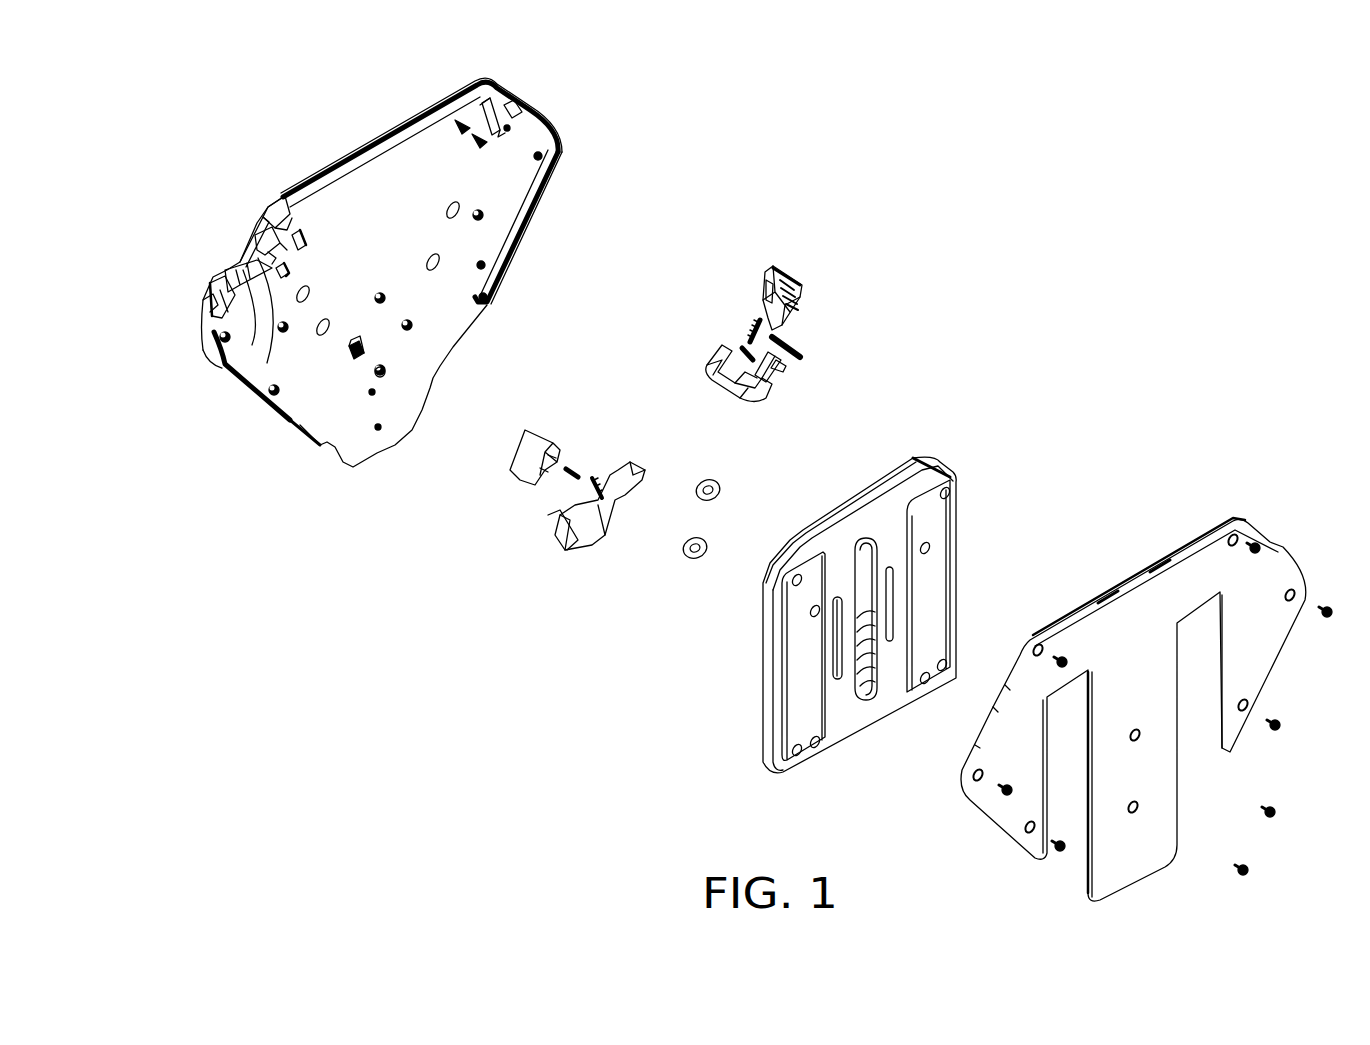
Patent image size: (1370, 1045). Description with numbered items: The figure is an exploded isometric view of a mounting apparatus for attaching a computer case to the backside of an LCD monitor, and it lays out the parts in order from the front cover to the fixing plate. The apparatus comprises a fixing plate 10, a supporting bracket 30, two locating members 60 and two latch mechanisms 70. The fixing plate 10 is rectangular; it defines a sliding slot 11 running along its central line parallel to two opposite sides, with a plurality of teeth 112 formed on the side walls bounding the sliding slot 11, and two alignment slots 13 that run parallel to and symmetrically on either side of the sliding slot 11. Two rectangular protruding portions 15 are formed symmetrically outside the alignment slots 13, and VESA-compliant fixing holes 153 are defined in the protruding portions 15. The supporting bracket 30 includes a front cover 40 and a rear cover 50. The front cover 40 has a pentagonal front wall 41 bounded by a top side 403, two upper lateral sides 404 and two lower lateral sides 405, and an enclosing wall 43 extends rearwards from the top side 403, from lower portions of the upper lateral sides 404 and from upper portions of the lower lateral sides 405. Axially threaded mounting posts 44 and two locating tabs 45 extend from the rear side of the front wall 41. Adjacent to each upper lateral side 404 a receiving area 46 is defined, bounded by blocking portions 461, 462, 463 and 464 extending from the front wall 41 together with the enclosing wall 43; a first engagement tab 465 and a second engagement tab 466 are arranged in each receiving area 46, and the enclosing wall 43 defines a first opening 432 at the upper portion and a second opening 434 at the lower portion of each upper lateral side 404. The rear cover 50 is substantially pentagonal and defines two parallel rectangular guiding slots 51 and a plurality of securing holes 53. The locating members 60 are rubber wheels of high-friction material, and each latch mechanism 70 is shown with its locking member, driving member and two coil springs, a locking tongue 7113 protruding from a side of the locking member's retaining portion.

The supporting bracket 30 is at (1017, 264).
The front cover 40 is at (611, 192).
The front wall 41 is at (430, 155).
The top side 403 is at (370, 140).
The enclosing wall 43 is at (540, 205).
The lower lateral sides 405 is at (308, 437).
The blocking portion 461 is at (283, 200).
The blocking portion 463 is at (302, 237).
The first opening 432 is at (257, 223).
The receiving areas 46 is at (260, 257).
The upper lateral sides 404 is at (230, 282).
The second opening 434 is at (222, 290).
The second engagement tab 466 is at (210, 306).
The blocking portion 462 is at (252, 345).
The blocking portion 464 is at (267, 363).
The locating tabs 45 is at (357, 357).
The mounting posts 44 is at (383, 377).
The first engagement tab 465 is at (275, 255).
The locking tongue 7113 is at (765, 280).
The locating members 60 is at (712, 478).
The latch mechanisms 70 is at (516, 524).
The fixing plate 10 is at (767, 650).
The protruding portions 15 is at (800, 695).
The fixing holes 153 is at (783, 577).
The alignment slots 13 is at (835, 630).
The sliding slot 11 is at (867, 703).
The teeth 112 is at (880, 675).
The rear cover 50 is at (1066, 556).
The guiding slots 51 is at (1215, 658).
The securing holes 53 is at (1295, 595).